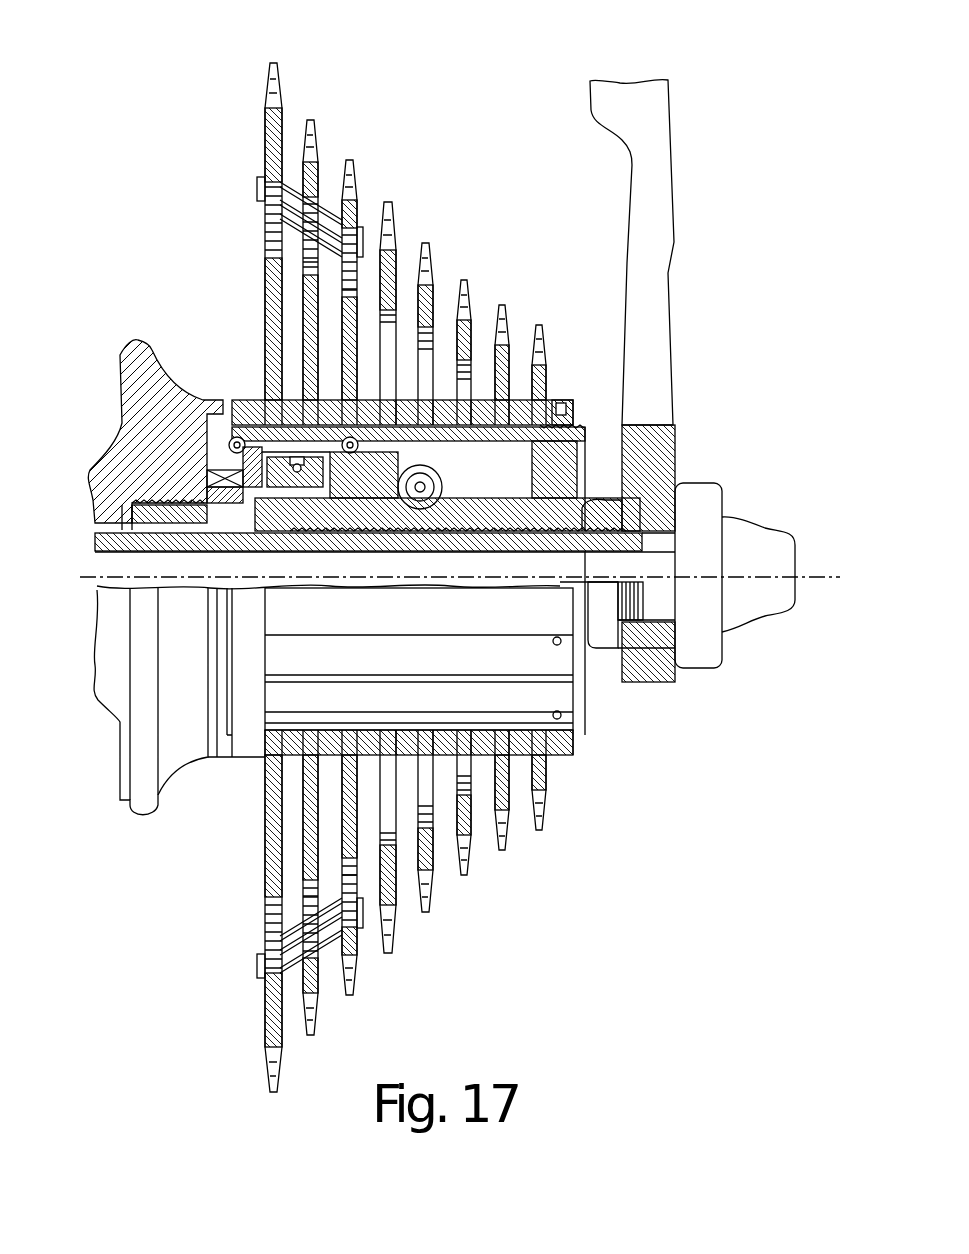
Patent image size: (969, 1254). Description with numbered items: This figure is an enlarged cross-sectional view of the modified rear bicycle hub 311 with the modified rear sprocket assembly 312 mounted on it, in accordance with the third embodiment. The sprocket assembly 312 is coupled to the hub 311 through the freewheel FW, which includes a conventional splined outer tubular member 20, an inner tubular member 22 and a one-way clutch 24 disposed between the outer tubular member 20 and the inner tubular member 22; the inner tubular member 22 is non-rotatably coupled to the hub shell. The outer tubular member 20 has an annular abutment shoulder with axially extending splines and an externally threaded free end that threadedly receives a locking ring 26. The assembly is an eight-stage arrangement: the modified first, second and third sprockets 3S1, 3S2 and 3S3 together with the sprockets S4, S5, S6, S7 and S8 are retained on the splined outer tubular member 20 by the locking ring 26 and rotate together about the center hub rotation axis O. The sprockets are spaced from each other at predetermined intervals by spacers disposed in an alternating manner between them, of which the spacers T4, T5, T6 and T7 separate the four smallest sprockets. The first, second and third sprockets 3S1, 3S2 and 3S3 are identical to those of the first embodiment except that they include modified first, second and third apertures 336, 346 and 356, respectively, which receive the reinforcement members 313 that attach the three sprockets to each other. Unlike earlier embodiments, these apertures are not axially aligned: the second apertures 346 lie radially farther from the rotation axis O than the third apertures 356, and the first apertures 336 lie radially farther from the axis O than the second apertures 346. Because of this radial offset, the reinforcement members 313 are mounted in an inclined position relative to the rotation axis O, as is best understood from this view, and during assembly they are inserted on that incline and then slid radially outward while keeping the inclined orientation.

The first sprocket 3S1 is at (281, 72).
The second sprocket 3S2 is at (321, 129).
The third sprocket 3S3 is at (359, 165).
The sprocket S4 is at (394, 201).
The sprocket S5 is at (433, 244).
The sprocket S6 is at (471, 283).
The sprocket S7 is at (511, 311).
The sprocket S8 is at (548, 333).
The spacer T4 is at (404, 398).
The spacer T5 is at (444, 398).
The spacer T6 is at (485, 398).
The spacer T7 is at (508, 402).
The rear sprocket assembly 312 is at (422, 549).
The reinforcement member 313 is at (260, 173).
The first aperture 336 is at (275, 236).
The second aperture 346 is at (308, 262).
The third aperture 356 is at (345, 290).
The freewheel FW is at (198, 376).
The one-way clutch 24 is at (266, 465).
The inner tubular member 22 is at (444, 446).
The locking ring 26 is at (578, 408).
The outer tubular member 20 is at (638, 440).
The rear bicycle hub 311 is at (696, 397).
The rotation axis O is at (733, 574).